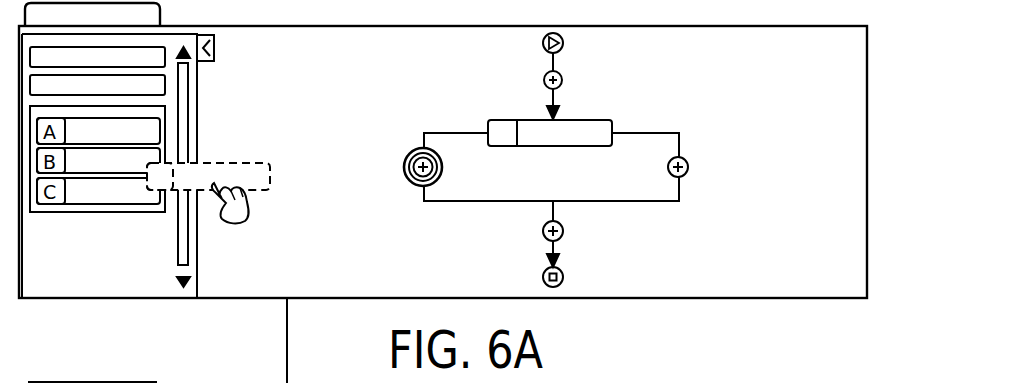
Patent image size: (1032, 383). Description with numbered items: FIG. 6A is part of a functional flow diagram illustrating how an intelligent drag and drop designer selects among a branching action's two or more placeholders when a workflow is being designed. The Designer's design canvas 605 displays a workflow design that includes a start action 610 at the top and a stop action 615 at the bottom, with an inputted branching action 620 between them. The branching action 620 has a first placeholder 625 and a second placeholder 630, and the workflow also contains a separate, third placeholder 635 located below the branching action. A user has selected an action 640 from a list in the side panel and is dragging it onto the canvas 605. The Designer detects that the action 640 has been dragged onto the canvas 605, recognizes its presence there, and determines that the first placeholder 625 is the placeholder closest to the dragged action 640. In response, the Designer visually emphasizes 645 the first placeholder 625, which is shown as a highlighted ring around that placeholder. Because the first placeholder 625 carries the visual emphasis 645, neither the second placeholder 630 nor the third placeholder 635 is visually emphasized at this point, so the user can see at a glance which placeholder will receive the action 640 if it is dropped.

The design canvas 605 is at (840, 73).
The start action 610 is at (562, 49).
The stop action 615 is at (562, 280).
The branching action 620 is at (598, 120).
The first placeholder 625 is at (438, 150).
The second placeholder 630 is at (688, 167).
The third placeholder 635 is at (562, 238).
The action 640 is at (243, 165).
The visual emphasis 645 is at (408, 182).